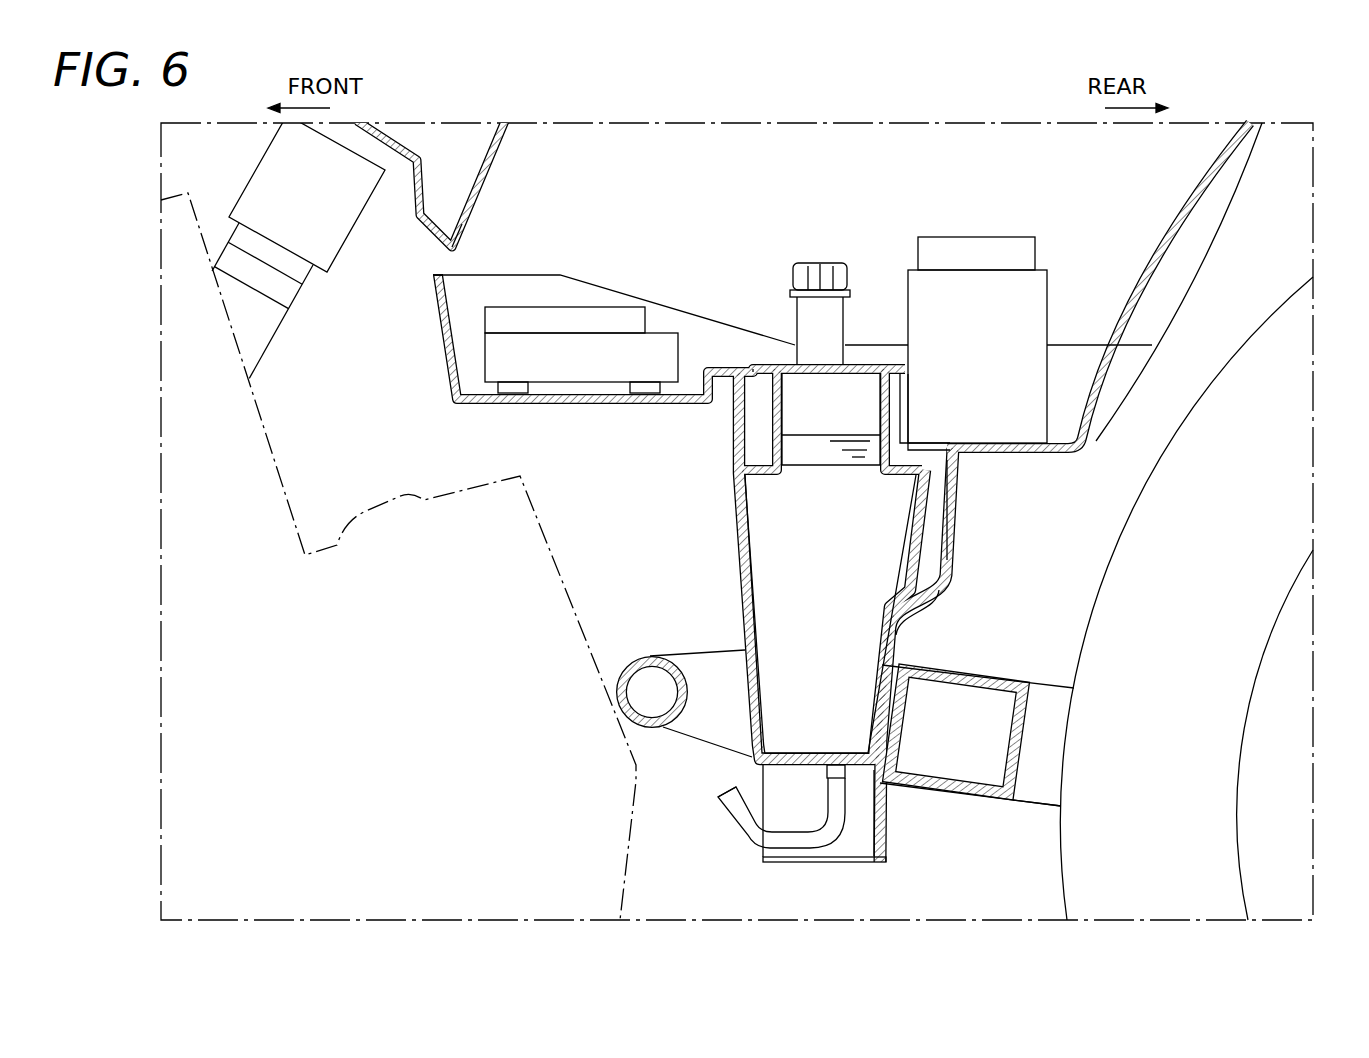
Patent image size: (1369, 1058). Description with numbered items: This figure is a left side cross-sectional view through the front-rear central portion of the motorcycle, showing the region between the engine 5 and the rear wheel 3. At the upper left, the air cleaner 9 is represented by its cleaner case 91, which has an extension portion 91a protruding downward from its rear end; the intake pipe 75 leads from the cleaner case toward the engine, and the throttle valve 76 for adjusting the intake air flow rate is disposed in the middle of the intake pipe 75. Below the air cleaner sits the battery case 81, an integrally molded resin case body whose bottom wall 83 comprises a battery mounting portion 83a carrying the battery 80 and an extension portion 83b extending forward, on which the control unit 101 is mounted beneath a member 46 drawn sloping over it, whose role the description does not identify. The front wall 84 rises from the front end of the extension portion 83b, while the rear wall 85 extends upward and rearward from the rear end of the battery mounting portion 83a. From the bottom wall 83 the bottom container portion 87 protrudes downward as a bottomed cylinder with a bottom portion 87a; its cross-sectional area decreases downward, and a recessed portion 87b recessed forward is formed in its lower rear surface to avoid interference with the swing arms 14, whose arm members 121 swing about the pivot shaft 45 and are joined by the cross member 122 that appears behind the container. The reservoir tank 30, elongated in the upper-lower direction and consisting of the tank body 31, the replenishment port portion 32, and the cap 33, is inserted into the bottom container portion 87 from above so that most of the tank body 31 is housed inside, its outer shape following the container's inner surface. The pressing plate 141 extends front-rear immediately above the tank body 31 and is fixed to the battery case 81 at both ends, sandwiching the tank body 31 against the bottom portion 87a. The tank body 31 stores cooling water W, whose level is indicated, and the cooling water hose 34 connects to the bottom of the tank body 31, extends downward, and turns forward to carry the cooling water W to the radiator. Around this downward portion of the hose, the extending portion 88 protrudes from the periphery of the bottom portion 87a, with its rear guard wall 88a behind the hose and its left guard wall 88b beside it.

The rear wheel 3 is at (1307, 518).
The engine 5 is at (172, 496).
The air cleaner 9 is at (499, 184).
The swing arms 14 is at (1000, 815).
The reservoir tank 30 is at (756, 432).
The tank body 31 is at (740, 552).
The replenishment port portion 32 is at (832, 318).
The cap 33 is at (820, 263).
The cooling water hose 34 is at (787, 842).
The pivot shaft 45 is at (640, 657).
The cover 46 is at (670, 322).
The intake pipe 75 is at (262, 333).
The throttle valve 76 is at (268, 172).
The battery 80 is at (1030, 288).
The battery case 81 is at (811, 492).
The bottom wall 83 is at (841, 492).
The battery mounting portion 83a is at (1003, 456).
The extension portion 83b is at (595, 398).
The front wall 84 is at (433, 322).
The rear wall 85 is at (1150, 325).
The bottom container portion 87 is at (960, 510).
The bottom portion 87a is at (730, 800).
The recessed portion 87b is at (908, 612).
The extending portion 88 is at (888, 835).
The rear guard wall 88a is at (886, 828).
The left guard wall 88b is at (856, 853).
The cleaner case 91 is at (517, 142).
The extension portion 91a is at (487, 214).
The control unit 101 is at (584, 312).
The arm members 121 is at (1037, 785).
The cross member 122 is at (992, 679).
The pressing plate 141 is at (771, 351).
The cooling water W is at (813, 441).